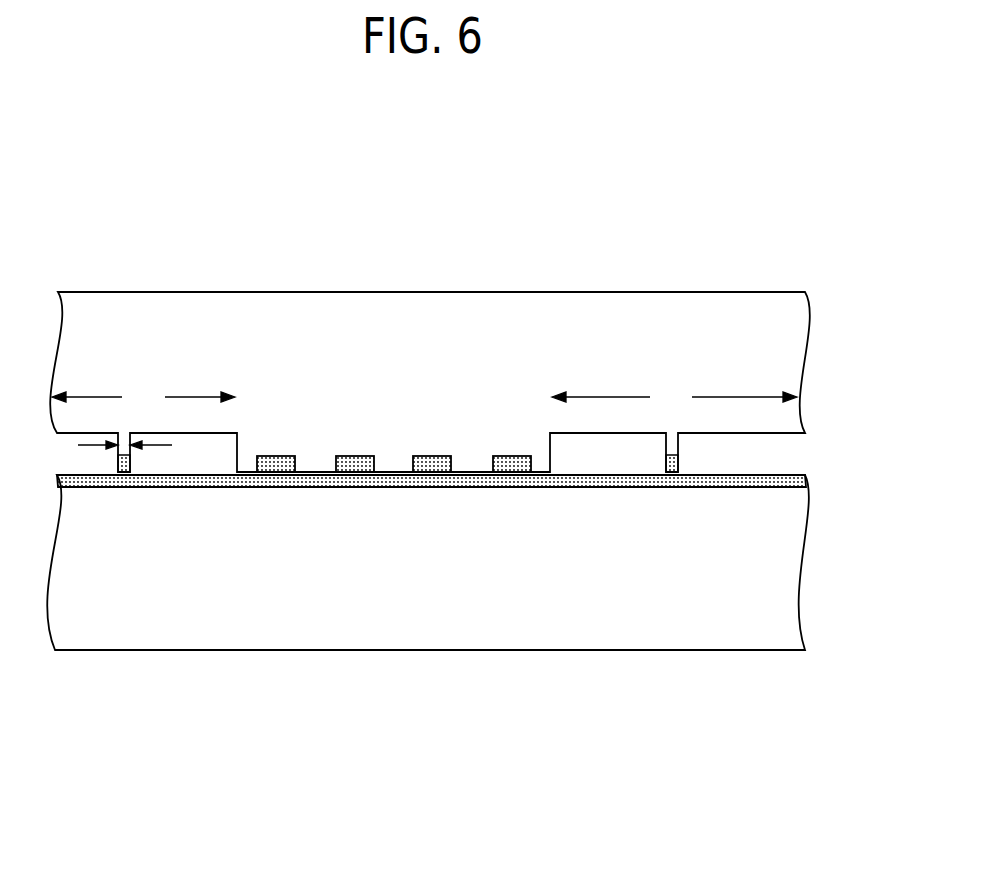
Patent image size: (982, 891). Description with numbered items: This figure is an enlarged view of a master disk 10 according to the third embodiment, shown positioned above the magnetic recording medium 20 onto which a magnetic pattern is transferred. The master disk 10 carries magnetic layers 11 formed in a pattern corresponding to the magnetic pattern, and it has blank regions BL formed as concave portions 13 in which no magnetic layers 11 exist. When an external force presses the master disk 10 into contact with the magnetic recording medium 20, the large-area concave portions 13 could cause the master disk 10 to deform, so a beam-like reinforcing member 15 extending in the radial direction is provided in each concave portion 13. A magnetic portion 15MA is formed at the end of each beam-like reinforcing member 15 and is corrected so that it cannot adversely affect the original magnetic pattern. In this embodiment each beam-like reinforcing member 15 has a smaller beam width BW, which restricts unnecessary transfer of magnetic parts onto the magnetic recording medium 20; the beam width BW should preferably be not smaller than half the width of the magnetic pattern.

The master disk 10 is at (803, 340).
The magnetic layer 11 is at (514, 456).
The concave portion 13 is at (578, 454).
The beam-like reinforcing member 15 is at (131, 454).
The magnetic portion 15MA is at (122, 473).
The magnetic recording medium 20 is at (803, 533).
The blank region BL is at (424, 398).
The beam width BW is at (128, 437).